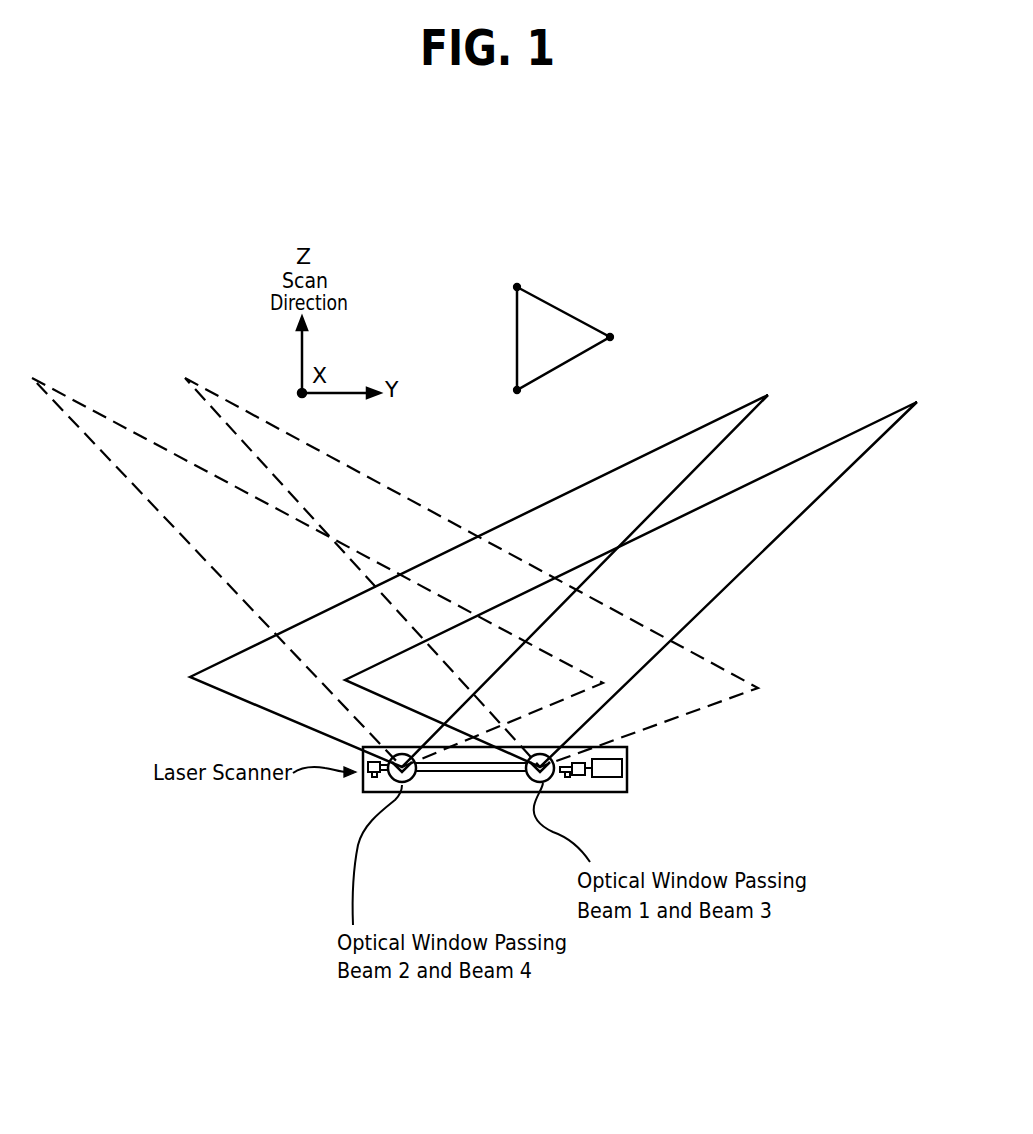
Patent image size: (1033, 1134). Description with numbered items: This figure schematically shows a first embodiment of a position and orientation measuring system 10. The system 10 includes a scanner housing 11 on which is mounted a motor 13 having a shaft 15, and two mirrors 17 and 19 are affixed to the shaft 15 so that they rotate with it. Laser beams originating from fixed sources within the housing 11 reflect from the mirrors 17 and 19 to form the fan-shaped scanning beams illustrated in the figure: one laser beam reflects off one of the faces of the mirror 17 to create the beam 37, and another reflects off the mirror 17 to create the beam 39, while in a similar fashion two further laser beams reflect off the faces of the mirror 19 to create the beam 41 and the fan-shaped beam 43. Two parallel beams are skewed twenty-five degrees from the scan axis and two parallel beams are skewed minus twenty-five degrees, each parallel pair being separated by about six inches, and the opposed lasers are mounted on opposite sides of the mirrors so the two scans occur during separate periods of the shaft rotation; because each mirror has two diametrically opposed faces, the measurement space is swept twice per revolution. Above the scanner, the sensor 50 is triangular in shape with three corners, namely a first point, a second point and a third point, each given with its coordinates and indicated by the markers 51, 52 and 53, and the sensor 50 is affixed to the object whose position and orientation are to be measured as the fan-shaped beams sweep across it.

The system 10 is at (230, 838).
The scanner housing 11 is at (434, 800).
The motor 13 is at (612, 767).
The shaft 15 is at (474, 772).
The mirror 17 is at (380, 783).
The mirror 19 is at (552, 783).
The beam 37 is at (680, 465).
The beam 39 is at (122, 442).
The beam 41 is at (827, 458).
The fan-shaped beam 43 is at (303, 463).
The sensor 50 is at (597, 351).
The first measured point P1 51 is at (478, 250).
The second measured point P2 52 is at (678, 327).
The third measured point P3 53 is at (512, 422).